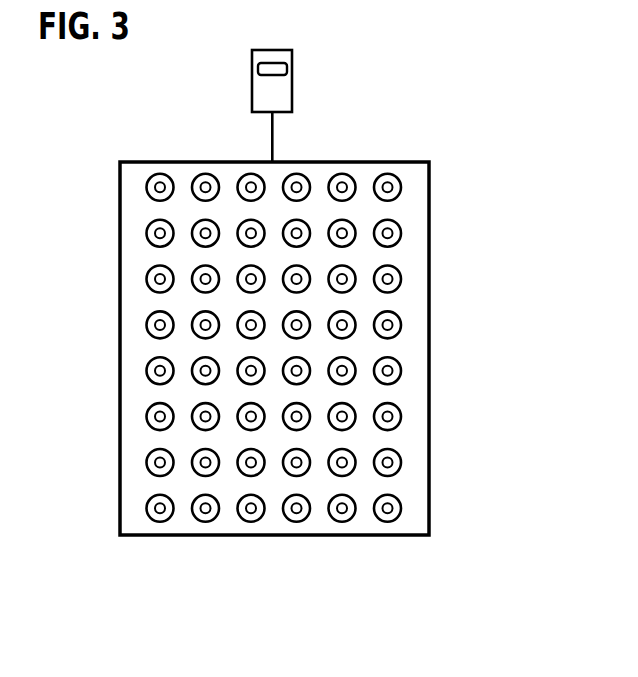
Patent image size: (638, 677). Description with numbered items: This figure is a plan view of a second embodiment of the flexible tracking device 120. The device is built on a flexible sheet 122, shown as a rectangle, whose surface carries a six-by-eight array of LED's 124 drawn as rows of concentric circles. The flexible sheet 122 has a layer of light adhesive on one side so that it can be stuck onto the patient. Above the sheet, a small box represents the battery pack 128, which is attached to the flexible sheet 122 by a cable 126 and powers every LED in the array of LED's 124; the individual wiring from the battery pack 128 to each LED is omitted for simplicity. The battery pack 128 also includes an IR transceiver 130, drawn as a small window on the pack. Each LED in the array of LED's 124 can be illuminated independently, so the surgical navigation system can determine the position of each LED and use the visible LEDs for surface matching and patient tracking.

The flexible tracking device 120 is at (429, 221).
The flexible sheet 122 is at (418, 288).
The array of LED's 124 is at (343, 521).
The cable 126 is at (272, 145).
The battery pack 128 is at (292, 97).
The IR transceiver 130 is at (287, 68).